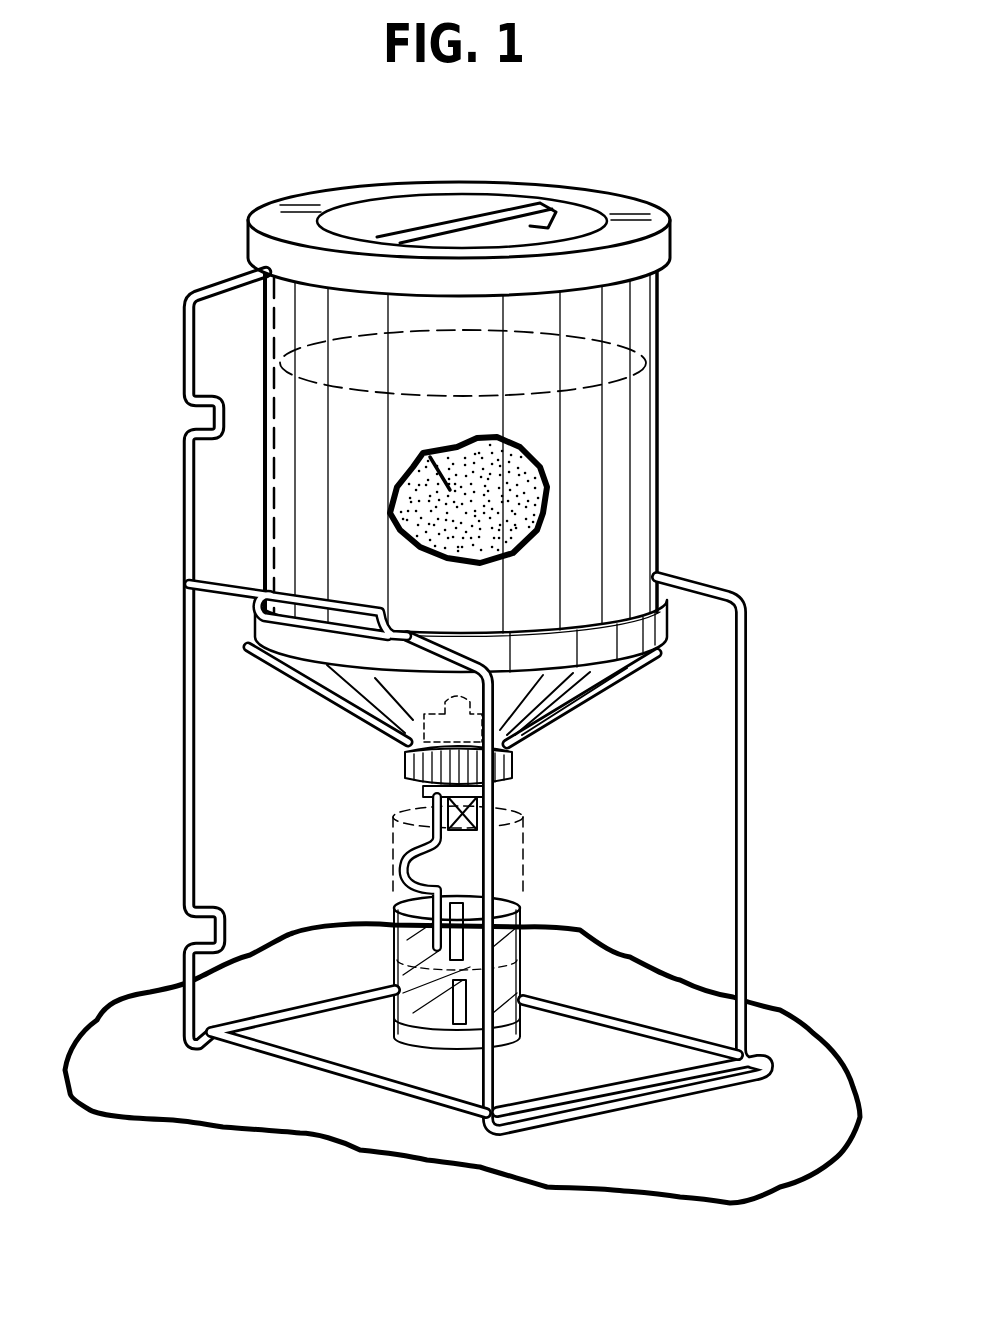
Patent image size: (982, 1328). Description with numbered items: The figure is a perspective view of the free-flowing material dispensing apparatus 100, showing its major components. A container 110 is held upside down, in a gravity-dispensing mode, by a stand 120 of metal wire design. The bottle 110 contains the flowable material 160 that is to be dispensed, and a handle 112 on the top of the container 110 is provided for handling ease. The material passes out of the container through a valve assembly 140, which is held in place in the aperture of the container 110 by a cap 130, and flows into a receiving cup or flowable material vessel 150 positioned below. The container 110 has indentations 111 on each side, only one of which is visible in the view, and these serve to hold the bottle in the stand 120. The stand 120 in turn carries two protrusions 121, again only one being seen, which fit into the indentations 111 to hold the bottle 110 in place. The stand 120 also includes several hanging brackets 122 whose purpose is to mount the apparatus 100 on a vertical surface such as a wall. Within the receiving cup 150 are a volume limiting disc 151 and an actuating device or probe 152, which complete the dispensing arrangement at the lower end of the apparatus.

The apparatus 100 is at (706, 542).
The container 110 is at (480, 399).
The indentations 111 is at (247, 644).
The handle 112 is at (498, 212).
The stand 120 is at (747, 677).
The protrusions 121 is at (331, 692).
The hanging brackets 122 is at (210, 412).
The cap 130 is at (513, 760).
The valve assembly 140 is at (492, 801).
The receiving cup 150 is at (522, 980).
The volume limiting disc 151 is at (392, 998).
The actuating device or probe 152 is at (390, 958).
The flowable material 160 is at (433, 453).